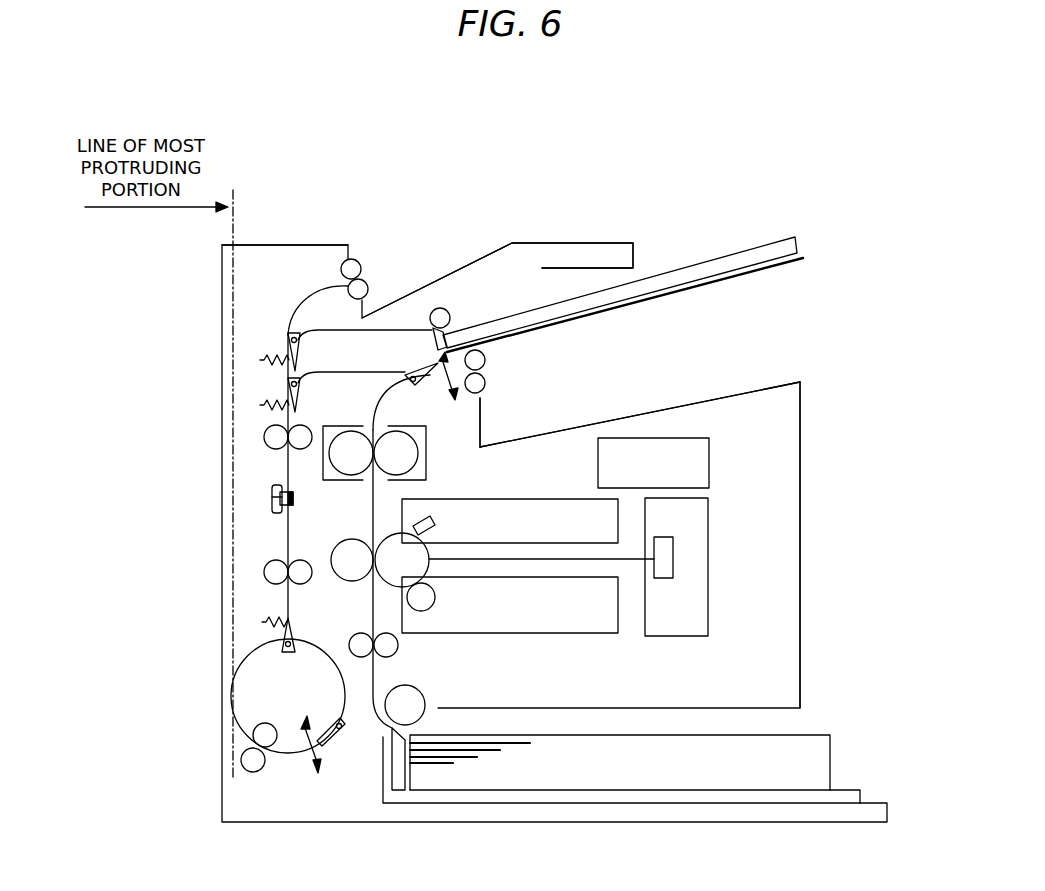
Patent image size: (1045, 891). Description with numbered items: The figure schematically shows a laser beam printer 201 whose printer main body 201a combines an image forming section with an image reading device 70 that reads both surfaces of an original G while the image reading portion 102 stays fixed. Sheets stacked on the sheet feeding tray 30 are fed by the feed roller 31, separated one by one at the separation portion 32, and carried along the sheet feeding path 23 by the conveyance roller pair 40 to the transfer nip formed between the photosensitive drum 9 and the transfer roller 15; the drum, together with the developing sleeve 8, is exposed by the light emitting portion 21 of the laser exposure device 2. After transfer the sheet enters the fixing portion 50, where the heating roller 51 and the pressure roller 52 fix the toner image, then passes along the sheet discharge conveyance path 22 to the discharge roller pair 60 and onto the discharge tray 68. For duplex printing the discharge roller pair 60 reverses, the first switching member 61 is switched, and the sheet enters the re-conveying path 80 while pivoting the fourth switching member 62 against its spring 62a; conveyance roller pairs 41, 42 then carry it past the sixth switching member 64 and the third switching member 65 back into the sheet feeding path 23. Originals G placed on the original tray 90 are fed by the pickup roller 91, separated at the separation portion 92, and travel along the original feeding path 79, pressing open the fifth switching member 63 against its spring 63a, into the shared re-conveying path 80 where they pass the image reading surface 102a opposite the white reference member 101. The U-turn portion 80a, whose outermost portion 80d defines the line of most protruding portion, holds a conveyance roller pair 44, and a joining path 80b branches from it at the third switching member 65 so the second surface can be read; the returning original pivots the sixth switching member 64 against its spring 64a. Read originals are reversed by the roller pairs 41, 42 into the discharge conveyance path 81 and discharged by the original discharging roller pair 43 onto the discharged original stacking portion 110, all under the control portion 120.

The laser beam printer 201 is at (678, 158).
The printer main body 201a is at (802, 521).
The discharge tray 68 is at (697, 402).
The first switching member 61 is at (481, 405).
The image reading device 70 is at (470, 236).
The discharged original stacking portion 110 is at (591, 242).
The original discharging roller pair 43 is at (355, 258).
The discharge conveyance path 81 is at (300, 312).
The original feeding path 79 is at (392, 329).
The pickup roller 91 is at (440, 307).
The separation portion 92 is at (490, 338).
The original tray 90 is at (758, 262).
The original G is at (705, 259).
The discharge roller pair 60 is at (486, 361).
The sheet discharge conveyance path 22 is at (410, 387).
The fifth switching member 63 is at (288, 336).
The spring 63a is at (260, 360).
The fourth switching member 62 is at (288, 380).
The spring 62a is at (260, 405).
The conveyance roller pair 41 is at (270, 438).
The re-conveying path 80 is at (287, 472).
The image reading portion 102 is at (272, 510).
The image reading surface 102a is at (271, 500).
The white reference member 101 is at (296, 498).
The conveyance roller pair 42 is at (268, 574).
The spring 64a is at (255, 622).
The sixth switching member 64 is at (282, 648).
The joining path 80b is at (323, 665).
The outermost portion 80d is at (222, 705).
The U-turn portion 80a is at (254, 737).
The conveyance roller pair 44 is at (253, 772).
The sheet feeding path 23 is at (368, 682).
The third switching member 65 is at (336, 744).
The pressure roller 52 is at (352, 431).
The heating roller 51 is at (414, 448).
The fixing portion 50 is at (426, 470).
The transfer roller 15 is at (352, 578).
The photosensitive drum 9 is at (430, 531).
The developing sleeve 8 is at (436, 597).
The laser exposure device 2 is at (709, 521).
The light emitting portion 21 is at (674, 560).
The control portion 120 is at (710, 447).
The conveyance roller pair 40 is at (398, 646).
The feed roller 31 is at (416, 698).
The separation portion 32 is at (398, 792).
The sheet feeding tray 30 is at (862, 784).